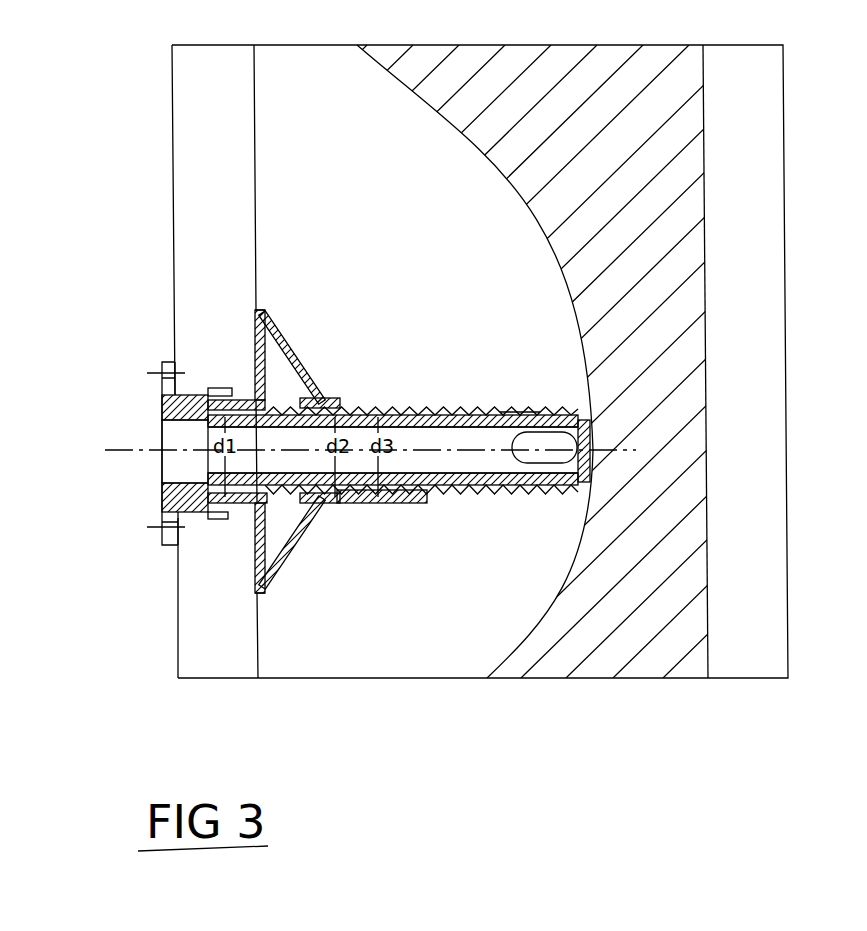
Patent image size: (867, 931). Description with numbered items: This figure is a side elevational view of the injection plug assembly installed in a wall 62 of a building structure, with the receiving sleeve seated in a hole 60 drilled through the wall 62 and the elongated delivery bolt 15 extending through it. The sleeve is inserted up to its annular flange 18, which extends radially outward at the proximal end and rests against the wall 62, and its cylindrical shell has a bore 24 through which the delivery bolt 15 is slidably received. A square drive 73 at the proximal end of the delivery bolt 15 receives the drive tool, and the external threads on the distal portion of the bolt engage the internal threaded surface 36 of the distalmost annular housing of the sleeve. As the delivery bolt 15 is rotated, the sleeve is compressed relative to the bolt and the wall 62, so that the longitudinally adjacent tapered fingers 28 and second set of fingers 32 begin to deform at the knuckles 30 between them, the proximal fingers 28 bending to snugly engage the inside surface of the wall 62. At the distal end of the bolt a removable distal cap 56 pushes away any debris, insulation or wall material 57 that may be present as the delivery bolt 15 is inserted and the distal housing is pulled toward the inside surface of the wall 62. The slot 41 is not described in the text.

The delivery bolt 15 is at (518, 409).
The annular flange 18 is at (165, 537).
The bore 24 is at (330, 406).
The tapered fingers 28 is at (256, 350).
The knuckle 30 is at (258, 312).
The second set of fingers 32 is at (290, 356).
The threaded surface 36 is at (395, 486).
The slot 41 is at (532, 431).
The distal cap 56 is at (590, 428).
The wall material 57 is at (667, 183).
The hole 60 is at (200, 390).
The wall 62 is at (192, 220).
The square drive 73 is at (162, 426).